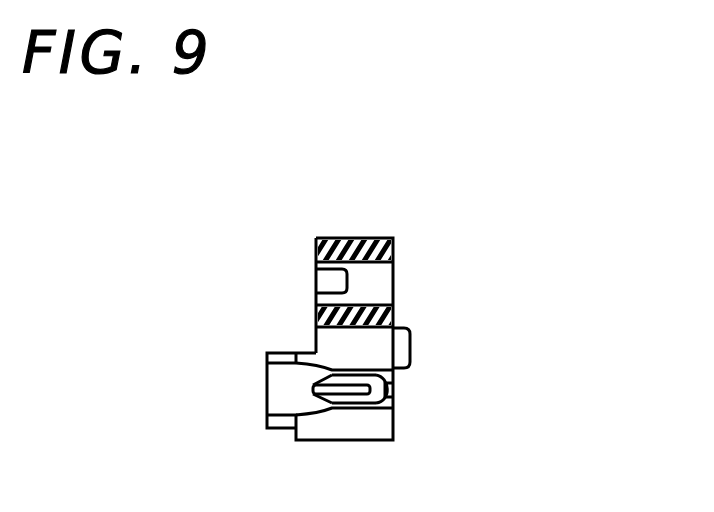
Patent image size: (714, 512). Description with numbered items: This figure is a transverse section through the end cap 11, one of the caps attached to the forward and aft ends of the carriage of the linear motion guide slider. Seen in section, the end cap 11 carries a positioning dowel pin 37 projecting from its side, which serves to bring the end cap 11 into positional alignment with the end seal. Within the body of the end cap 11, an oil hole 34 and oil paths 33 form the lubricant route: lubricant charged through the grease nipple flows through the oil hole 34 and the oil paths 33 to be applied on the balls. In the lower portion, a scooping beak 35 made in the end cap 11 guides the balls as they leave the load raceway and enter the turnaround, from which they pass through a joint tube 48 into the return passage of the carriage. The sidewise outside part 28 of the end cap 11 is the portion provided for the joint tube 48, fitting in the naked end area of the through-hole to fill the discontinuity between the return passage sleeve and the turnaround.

The end cap 11 is at (397, 237).
The oil path 33 is at (330, 283).
The oil hole 34 is at (385, 283).
The positioning dowel pin 37 is at (410, 357).
The joint tube 48 is at (278, 386).
The scooping beak 35 is at (350, 389).
The sidewise outside part 28 is at (277, 425).